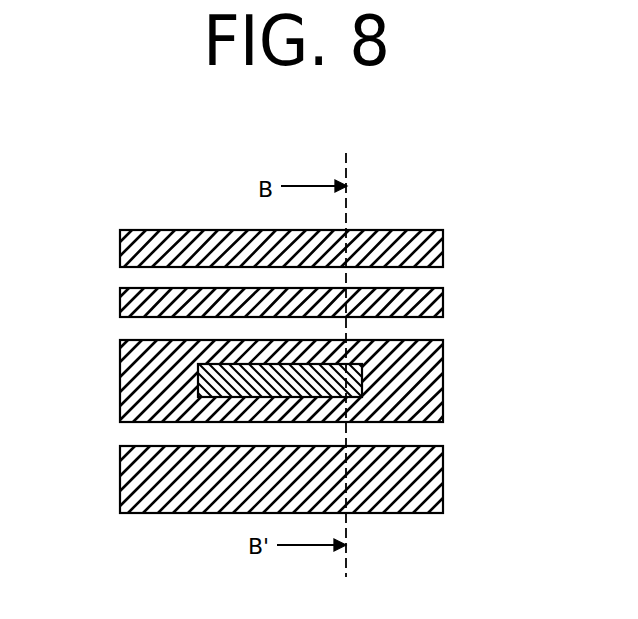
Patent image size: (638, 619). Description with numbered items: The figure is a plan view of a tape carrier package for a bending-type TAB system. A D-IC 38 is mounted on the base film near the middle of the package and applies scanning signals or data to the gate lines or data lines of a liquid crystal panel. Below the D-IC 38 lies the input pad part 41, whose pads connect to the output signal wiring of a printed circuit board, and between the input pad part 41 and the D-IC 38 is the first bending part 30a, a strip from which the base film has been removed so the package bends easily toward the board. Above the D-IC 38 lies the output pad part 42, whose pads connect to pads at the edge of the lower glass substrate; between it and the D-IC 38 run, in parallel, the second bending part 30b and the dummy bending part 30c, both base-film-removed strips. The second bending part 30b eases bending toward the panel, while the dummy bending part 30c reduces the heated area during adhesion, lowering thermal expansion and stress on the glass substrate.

The first bending part 30a is at (120, 438).
The second bending part 30b is at (120, 328).
The dummy bending part 30c is at (120, 272).
The D-IC 38 is at (363, 382).
The input pad part 41 is at (437, 488).
The output pad part 42 is at (438, 252).